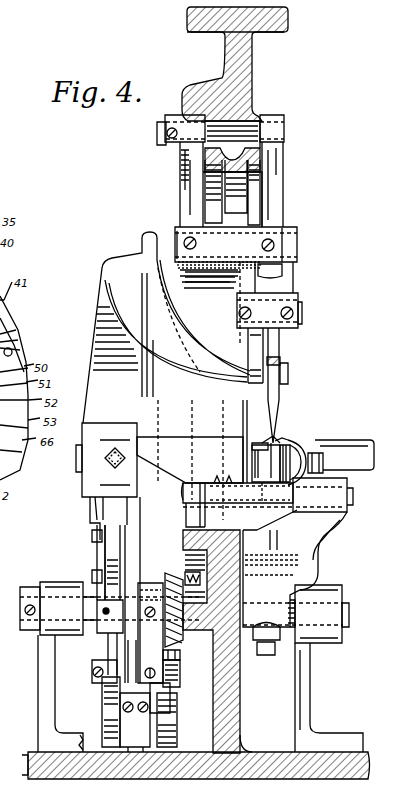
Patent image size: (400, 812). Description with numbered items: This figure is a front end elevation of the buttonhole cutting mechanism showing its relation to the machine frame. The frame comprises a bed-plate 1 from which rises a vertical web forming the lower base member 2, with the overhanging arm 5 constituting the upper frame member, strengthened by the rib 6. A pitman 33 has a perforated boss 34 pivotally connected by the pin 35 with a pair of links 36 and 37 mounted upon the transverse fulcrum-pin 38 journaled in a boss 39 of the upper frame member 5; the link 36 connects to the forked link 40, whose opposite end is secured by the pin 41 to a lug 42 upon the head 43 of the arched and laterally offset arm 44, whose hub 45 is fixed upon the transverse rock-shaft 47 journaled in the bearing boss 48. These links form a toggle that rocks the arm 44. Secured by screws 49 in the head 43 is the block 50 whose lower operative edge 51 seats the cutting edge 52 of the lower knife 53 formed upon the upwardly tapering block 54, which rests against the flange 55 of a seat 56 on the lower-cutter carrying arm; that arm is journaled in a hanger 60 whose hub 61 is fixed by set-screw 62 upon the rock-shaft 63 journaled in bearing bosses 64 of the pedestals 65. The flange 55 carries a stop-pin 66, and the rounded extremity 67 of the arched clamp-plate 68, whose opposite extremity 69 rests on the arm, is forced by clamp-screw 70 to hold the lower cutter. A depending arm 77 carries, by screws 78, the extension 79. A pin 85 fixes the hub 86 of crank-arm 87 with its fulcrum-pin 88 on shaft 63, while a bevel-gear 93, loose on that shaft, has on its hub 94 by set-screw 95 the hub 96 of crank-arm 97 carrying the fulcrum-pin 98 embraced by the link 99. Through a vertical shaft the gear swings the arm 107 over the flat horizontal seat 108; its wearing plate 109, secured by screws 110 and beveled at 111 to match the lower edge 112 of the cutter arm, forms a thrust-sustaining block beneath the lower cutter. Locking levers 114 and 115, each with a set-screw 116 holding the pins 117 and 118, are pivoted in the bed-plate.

The bed-plate 1 is at (277, 751).
The lower base member 2 is at (241, 700).
The overhanging arm 5 is at (253, 66).
The rib 6 is at (289, 15).
The pitman 33 is at (232, 193).
The perforated boss 34 is at (236, 244).
The pin 35 is at (298, 246).
The link 36 is at (284, 183).
The link 37 is at (190, 194).
The transverse fulcrum-pin 38 is at (285, 130).
The boss 39 is at (258, 116).
The forked link 40 is at (279, 303).
The pin 41 is at (303, 314).
The lug 42 is at (267, 310).
The head 43 is at (259, 355).
The arched and laterally offset arm 44 is at (166, 327).
The hub 45 is at (110, 428).
The transverse rock-shaft 47 is at (76, 466).
The bearing boss 48 is at (176, 432).
The screws 49 is at (289, 373).
The block 50 is at (281, 360).
The lower operative edge 51 is at (280, 410).
The cutting edge 52 is at (270, 440).
The lower knife 53 is at (277, 441).
The upwardly tapering block 54 is at (262, 444).
The flange 55 is at (246, 440).
The seat 56 is at (266, 463).
The hanger 60 is at (295, 568).
The hub 61 is at (274, 620).
The set-screw 62 is at (267, 656).
The rock-shaft 63 is at (350, 612).
The bearing bosses 64 is at (336, 585).
The pedestals 65 is at (313, 690).
The lateral stop-pin 66 is at (292, 443).
The rounded extremity 67 is at (296, 455).
The arched clamp-plate 68 is at (314, 452).
The opposite extremity 69 is at (323, 495).
The clamp-screw 70 is at (330, 450).
The depending arm 77 is at (112, 562).
The screws 78 is at (96, 574).
The extension 79 is at (133, 604).
The pin 85 is at (105, 615).
The hub 86 is at (110, 614).
The crank-arm 87 is at (107, 654).
The fulcrum-pin 88 is at (92, 672).
The bevel-gear 93 is at (170, 576).
The hub 94 is at (150, 633).
The set-screw 95 is at (150, 640).
The hub 96 is at (166, 584).
The crank-arm 97 is at (180, 652).
The fulcrum-pin 98 is at (181, 676).
The link 99 is at (178, 720).
The swinging arm 107 is at (235, 500).
The flat horizontal seat 108 is at (238, 518).
The wearing plate 109 is at (250, 494).
The screws 110 is at (222, 476).
The bevel 111 is at (275, 493).
The lower edge 112 is at (272, 466).
The locking lever 114 is at (130, 748).
The locking lever 115 is at (144, 748).
The set-screw 116 is at (118, 718).
The pin 117 is at (120, 708).
The pin 118 is at (176, 705).